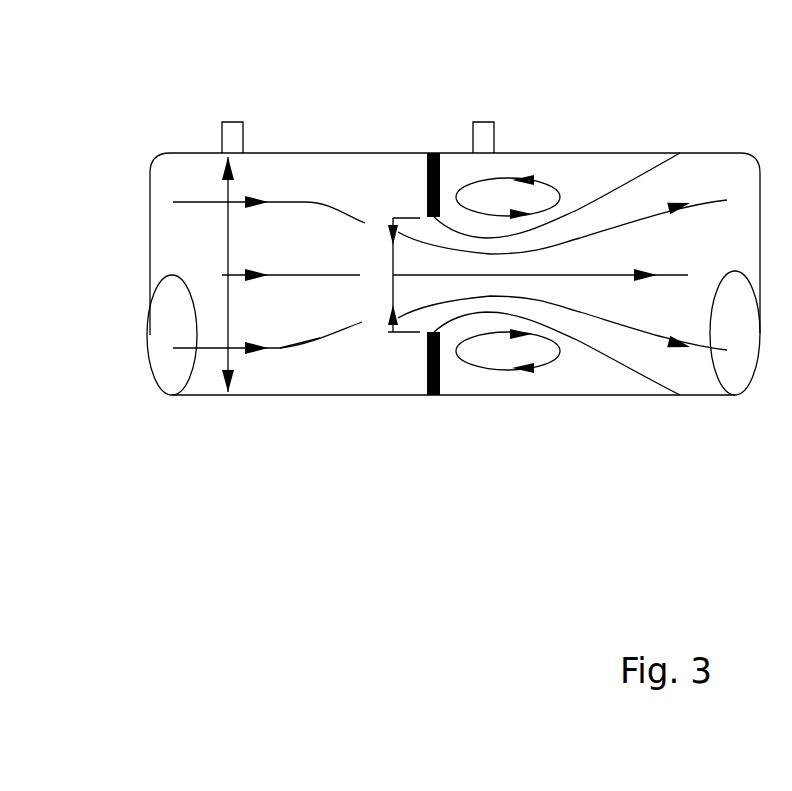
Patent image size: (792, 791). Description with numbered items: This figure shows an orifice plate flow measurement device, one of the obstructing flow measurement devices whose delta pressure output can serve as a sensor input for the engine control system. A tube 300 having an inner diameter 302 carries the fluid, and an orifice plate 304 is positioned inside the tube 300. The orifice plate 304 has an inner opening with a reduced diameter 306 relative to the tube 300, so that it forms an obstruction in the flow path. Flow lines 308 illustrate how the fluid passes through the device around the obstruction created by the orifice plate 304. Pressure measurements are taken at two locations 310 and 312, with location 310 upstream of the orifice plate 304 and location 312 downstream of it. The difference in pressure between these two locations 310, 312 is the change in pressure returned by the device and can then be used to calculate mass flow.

The tube 300 is at (603, 73).
The inner diameter 302 is at (231, 248).
The orifice plate 304 is at (434, 396).
The reduced diameter 306 is at (393, 262).
The flow lines 308 is at (343, 226).
The upstream pressure measurement location 310 is at (243, 122).
The downstream pressure measurement location 312 is at (473, 122).